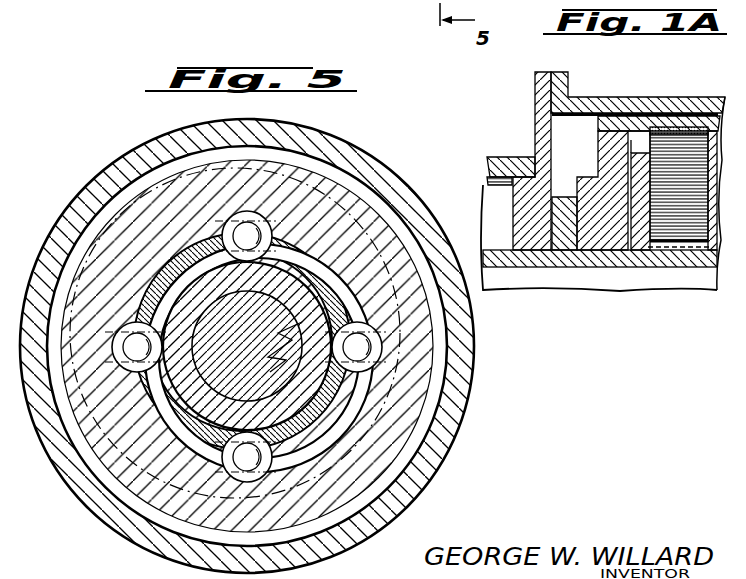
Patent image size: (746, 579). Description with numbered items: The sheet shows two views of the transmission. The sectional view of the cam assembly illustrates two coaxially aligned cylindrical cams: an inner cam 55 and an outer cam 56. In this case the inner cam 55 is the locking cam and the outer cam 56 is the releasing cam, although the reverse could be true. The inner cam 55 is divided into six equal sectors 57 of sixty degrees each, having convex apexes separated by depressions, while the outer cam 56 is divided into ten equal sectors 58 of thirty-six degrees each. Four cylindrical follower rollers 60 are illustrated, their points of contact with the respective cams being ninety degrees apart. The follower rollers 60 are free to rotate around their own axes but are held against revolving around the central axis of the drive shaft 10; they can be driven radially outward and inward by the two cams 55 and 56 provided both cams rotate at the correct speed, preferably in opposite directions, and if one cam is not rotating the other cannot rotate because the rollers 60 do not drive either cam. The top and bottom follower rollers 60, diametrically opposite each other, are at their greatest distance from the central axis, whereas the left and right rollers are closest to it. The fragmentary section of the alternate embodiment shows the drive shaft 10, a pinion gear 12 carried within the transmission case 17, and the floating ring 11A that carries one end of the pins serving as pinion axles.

In FIG. 5, the equal sectors of the outer cam 58 is at (184, 213).
In FIG. 5, the outer cam 56 is at (342, 203).
In FIG. 5, the inner cam 55 is at (297, 282).
In FIG. 5, the equal sectors of the inner cam 57 is at (276, 323).
In FIG. 5, the cylindrical follower rollers 60 is at (264, 213).
In FIG. 1A, the transmission case 17 is at (656, 97).
In FIG. 1A, the pinion gear 12 is at (673, 142).
In FIG. 1A, the floating ring 11A is at (644, 245).
In FIG. 1A, the drive shaft 10 is at (693, 280).